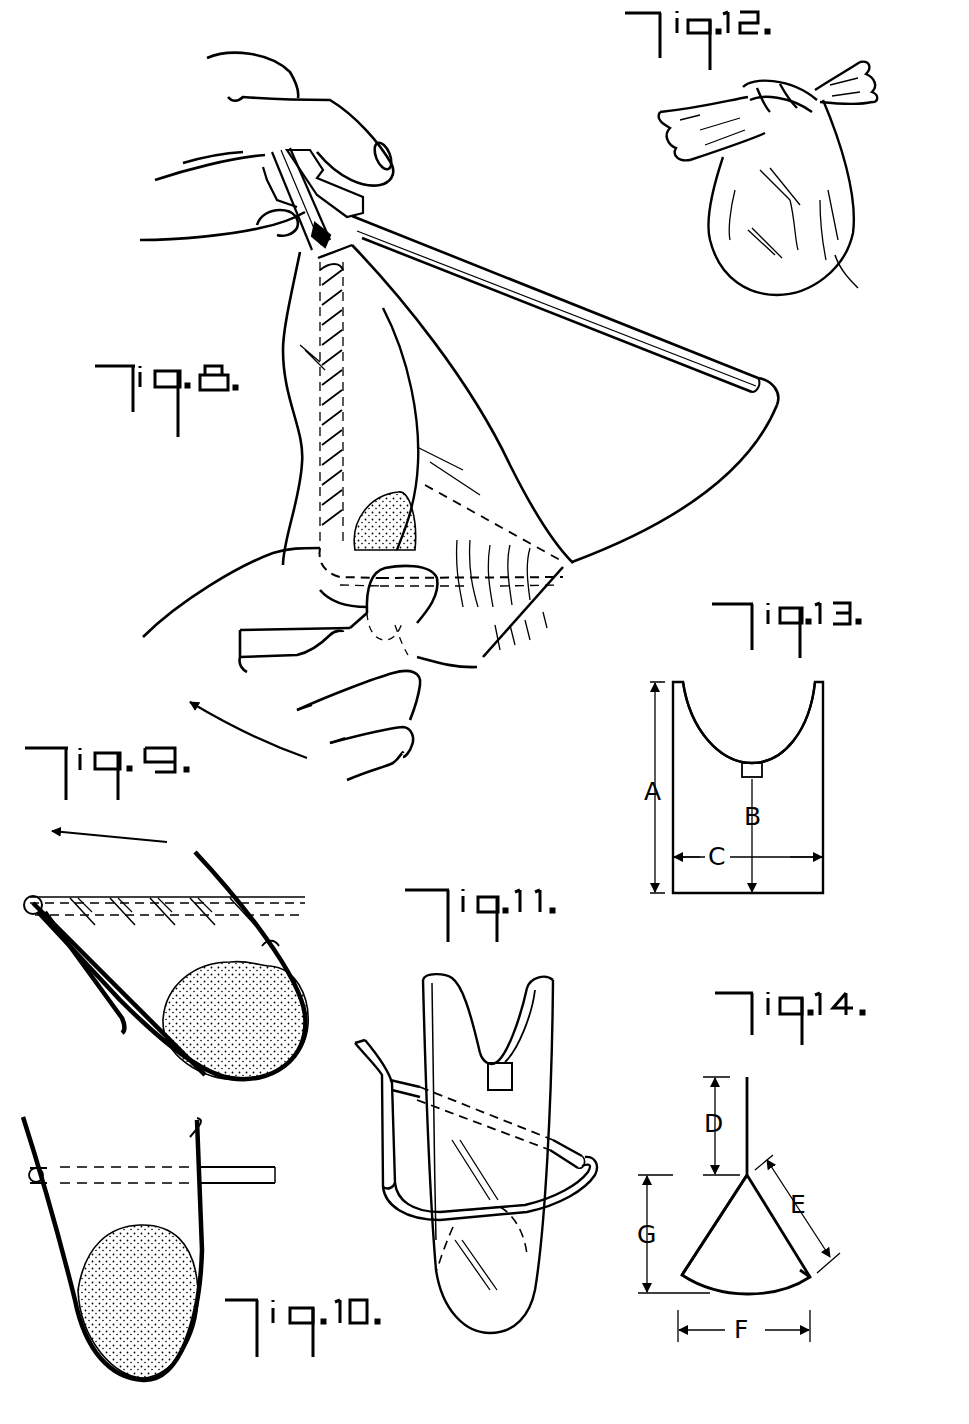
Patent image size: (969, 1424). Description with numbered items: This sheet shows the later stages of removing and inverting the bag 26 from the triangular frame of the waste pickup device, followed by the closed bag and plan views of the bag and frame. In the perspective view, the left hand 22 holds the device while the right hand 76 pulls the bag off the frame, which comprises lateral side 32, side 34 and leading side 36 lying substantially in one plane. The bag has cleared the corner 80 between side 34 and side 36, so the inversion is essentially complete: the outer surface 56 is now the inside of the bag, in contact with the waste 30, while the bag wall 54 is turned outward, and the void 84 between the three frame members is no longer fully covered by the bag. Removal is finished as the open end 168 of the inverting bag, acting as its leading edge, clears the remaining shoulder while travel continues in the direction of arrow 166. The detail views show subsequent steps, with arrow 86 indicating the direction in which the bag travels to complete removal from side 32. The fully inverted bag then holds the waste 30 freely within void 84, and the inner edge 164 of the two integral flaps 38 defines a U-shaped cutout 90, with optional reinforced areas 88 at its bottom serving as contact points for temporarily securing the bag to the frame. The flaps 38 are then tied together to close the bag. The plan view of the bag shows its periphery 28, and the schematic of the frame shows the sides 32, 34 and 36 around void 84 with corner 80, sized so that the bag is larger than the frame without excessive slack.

In FIG. 8, the left hand 22 is at (192, 128).
In FIG. 11, the bag 26 is at (555, 1046).
In FIG. 12, the bag 26 is at (833, 172).
In FIG. 13, the periphery 28 is at (825, 750).
In FIG. 8, the waste 30 is at (515, 603).
In FIG. 9, the waste 30 is at (312, 993).
In FIG. 10, the waste 30 is at (72, 1290).
In FIG. 11, the waste 30 is at (520, 1277).
In FIG. 8, the side 32 is at (320, 440).
In FIG. 9, the side 32 is at (278, 897).
In FIG. 10, the side 32 is at (240, 1182).
In FIG. 14, the side 32 is at (708, 1232).
In FIG. 8, the side 34 is at (548, 302).
In FIG. 11, the side 34 is at (583, 1155).
In FIG. 8, the side 36 is at (694, 500).
In FIG. 11, the side 36 is at (565, 1198).
In FIG. 11, the integral flaps 38 is at (440, 975).
In FIG. 12, the integral flaps 38 is at (846, 70).
In FIG. 8, the bag wall 54 is at (465, 412).
In FIG. 9, the bag wall 54 is at (290, 955).
In FIG. 10, the bag wall 54 is at (190, 1137).
In FIG. 12, the bag wall 54 is at (858, 280).
In FIG. 8, the outer surface 56 is at (345, 497).
In FIG. 9, the outer surface 56 is at (300, 968).
In FIG. 10, the outer surface 56 is at (210, 1140).
In FIG. 8, the right hand 76 is at (210, 653).
In FIG. 8, the corner 80 is at (782, 405).
In FIG. 14, the corner 80 is at (812, 1278).
In FIG. 8, the void 84 is at (445, 290).
In FIG. 14, the void 84 is at (758, 1254).
In FIG. 9, the arrow 86 is at (140, 837).
In FIG. 11, the reinforced areas 88 is at (505, 1082).
In FIG. 13, the reinforced areas 88 is at (750, 762).
In FIG. 11, the U-shaped cutout 90 is at (483, 1000).
In FIG. 13, the U-shaped cutout 90 is at (750, 725).
In FIG. 11, the inner edge 164 is at (530, 1016).
In FIG. 13, the inner edge 164 is at (693, 705).
In FIG. 8, the arrow 166 is at (263, 743).
In FIG. 8, the open end 168 is at (420, 437).